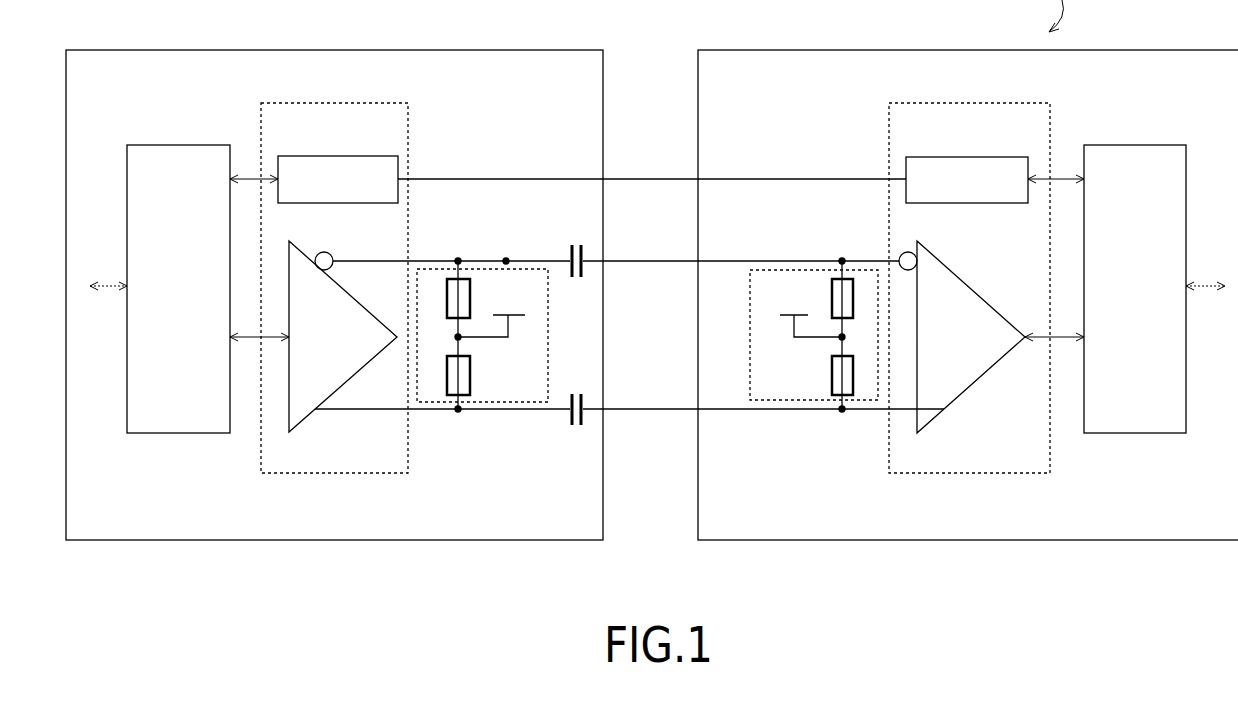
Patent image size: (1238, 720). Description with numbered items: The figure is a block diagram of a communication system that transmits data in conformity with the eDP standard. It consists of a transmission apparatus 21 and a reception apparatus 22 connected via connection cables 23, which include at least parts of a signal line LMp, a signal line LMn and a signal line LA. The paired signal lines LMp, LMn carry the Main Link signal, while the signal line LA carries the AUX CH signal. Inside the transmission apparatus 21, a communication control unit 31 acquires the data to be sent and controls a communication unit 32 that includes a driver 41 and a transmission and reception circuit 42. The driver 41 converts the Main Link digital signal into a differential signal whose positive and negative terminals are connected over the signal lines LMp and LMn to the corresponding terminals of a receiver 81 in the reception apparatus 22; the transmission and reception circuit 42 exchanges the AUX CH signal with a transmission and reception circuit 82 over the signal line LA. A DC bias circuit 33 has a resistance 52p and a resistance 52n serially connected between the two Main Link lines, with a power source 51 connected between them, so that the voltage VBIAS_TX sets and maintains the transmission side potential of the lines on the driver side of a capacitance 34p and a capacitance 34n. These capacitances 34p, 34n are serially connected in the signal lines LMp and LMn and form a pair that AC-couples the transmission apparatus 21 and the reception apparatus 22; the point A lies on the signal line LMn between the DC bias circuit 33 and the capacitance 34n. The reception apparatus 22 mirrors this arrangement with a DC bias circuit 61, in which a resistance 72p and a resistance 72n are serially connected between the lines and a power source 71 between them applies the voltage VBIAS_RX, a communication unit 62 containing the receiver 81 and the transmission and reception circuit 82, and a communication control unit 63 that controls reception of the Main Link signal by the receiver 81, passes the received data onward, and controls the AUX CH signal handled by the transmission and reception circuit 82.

The transmission apparatus 21 is at (133, 50).
The reception apparatus 22 is at (1184, 50).
The connection cables 23 is at (629, 216).
The communication control unit 31 is at (187, 145).
The communication unit 32 is at (338, 473).
The DC bias circuit 33 is at (508, 327).
The capacitance 34n is at (568, 245).
The capacitance 34p is at (566, 427).
The driver 41 is at (316, 252).
The transmission and reception circuit 42 is at (345, 156).
The power source 51 is at (518, 322).
The resistance 52n is at (447, 295).
The resistance 52p is at (470, 380).
The DC bias circuit 61 is at (789, 332).
The communication unit 62 is at (965, 473).
The communication control unit 63 is at (1146, 145).
The power source 71 is at (784, 322).
The resistance 72n is at (853, 295).
The resistance 72p is at (832, 378).
The receiver 81 is at (966, 276).
The transmission and reception circuit 82 is at (972, 157).
The point A is at (506, 261).
The signal line LA is at (647, 179).
The signal line LMn is at (645, 261).
The signal line LMp is at (638, 409).